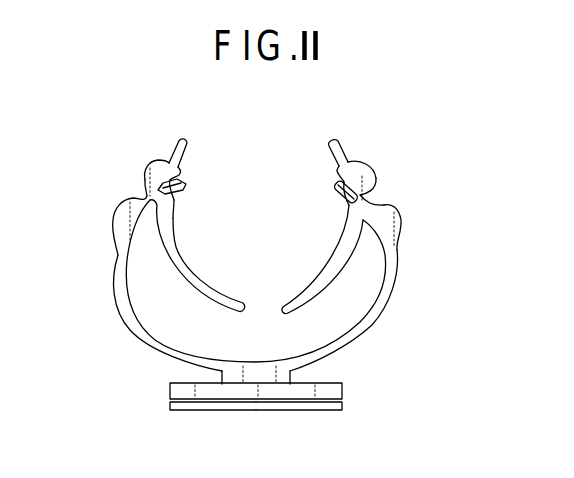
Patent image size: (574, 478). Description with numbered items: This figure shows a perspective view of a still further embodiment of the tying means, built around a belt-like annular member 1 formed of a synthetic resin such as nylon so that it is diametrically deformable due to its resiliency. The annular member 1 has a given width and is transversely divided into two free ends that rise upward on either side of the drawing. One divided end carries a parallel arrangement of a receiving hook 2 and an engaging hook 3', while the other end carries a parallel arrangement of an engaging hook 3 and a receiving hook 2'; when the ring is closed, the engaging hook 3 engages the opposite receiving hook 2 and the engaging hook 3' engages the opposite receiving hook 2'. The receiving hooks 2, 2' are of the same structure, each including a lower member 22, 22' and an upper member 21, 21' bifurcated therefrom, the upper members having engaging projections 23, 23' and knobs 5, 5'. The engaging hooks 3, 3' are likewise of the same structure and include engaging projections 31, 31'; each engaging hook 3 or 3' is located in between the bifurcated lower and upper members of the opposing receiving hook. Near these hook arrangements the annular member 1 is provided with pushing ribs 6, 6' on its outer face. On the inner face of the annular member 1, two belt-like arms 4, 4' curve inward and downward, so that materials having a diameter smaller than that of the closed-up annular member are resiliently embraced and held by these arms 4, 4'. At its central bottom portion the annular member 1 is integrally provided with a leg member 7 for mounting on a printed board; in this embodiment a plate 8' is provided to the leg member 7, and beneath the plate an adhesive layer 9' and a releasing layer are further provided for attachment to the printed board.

The annular member 1 is at (160, 338).
The receiving hook 2 is at (137, 148).
The receiving hook 2' is at (383, 159).
The upper member 21 is at (118, 168).
The upper member 21' is at (395, 159).
The lower member 22 is at (199, 226).
The lower member 22' is at (324, 206).
The engaging projection 23 is at (202, 166).
The engaging projection 23' is at (311, 168).
The engaging hook 3 is at (367, 190).
The engaging hook 3' is at (192, 200).
The engaging projection 31 is at (323, 191).
The engaging projection 31' is at (206, 187).
The belt-like arm 4 is at (166, 267).
The belt-like arm 4' is at (357, 261).
The knob 5 is at (179, 129).
The knob 5' is at (341, 128).
The pushing rib 6 is at (104, 225).
The pushing rib 6' is at (415, 227).
The leg member 7 is at (290, 377).
The plate 8' is at (227, 394).
The adhesive layer 9' is at (192, 418).